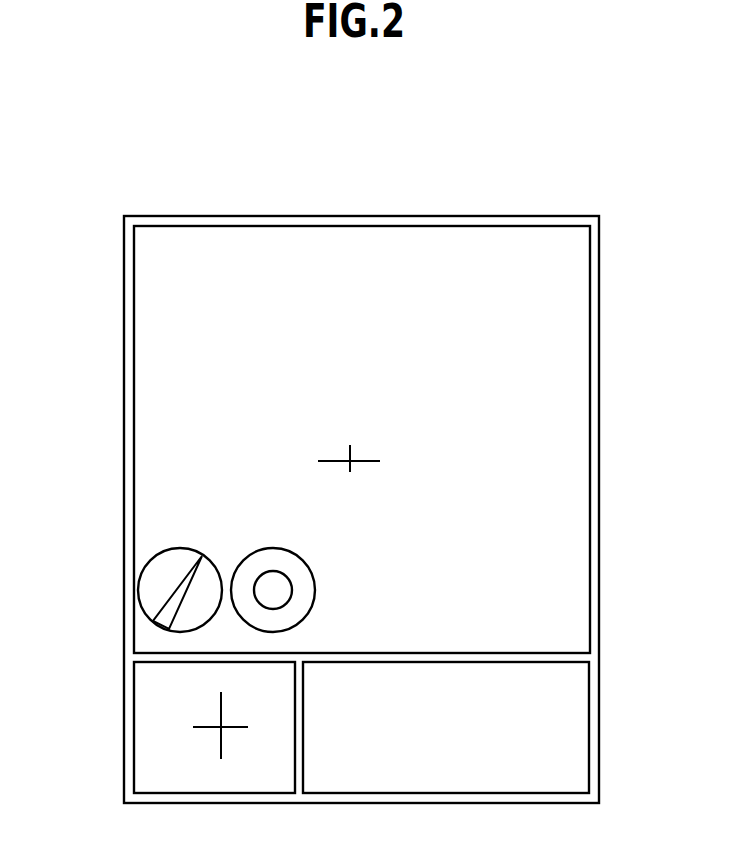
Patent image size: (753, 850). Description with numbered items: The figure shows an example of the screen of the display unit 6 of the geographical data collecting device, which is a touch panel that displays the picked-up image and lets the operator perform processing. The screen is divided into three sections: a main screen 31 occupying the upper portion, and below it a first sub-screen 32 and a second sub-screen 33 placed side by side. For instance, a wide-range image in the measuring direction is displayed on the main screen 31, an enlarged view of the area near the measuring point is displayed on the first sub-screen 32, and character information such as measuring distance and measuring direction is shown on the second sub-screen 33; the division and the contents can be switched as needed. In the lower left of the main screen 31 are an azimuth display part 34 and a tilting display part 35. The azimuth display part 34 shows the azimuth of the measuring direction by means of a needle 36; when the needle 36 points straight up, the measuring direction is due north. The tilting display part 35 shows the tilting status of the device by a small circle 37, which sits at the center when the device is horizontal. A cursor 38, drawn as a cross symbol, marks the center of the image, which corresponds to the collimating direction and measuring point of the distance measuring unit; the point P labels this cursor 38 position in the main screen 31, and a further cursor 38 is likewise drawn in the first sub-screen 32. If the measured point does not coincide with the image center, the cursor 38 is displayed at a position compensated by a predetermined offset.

The display unit 6 is at (420, 213).
The main screen 31 is at (460, 270).
The first sub-screen 32 is at (173, 677).
The second sub-screen 33 is at (520, 732).
The azimuth display part 34 is at (180, 634).
The tilting display part 35 is at (315, 600).
The needle 36 is at (186, 573).
The small circle 37 is at (292, 587).
The cursor 38 is at (380, 461).
The point P is at (350, 461).